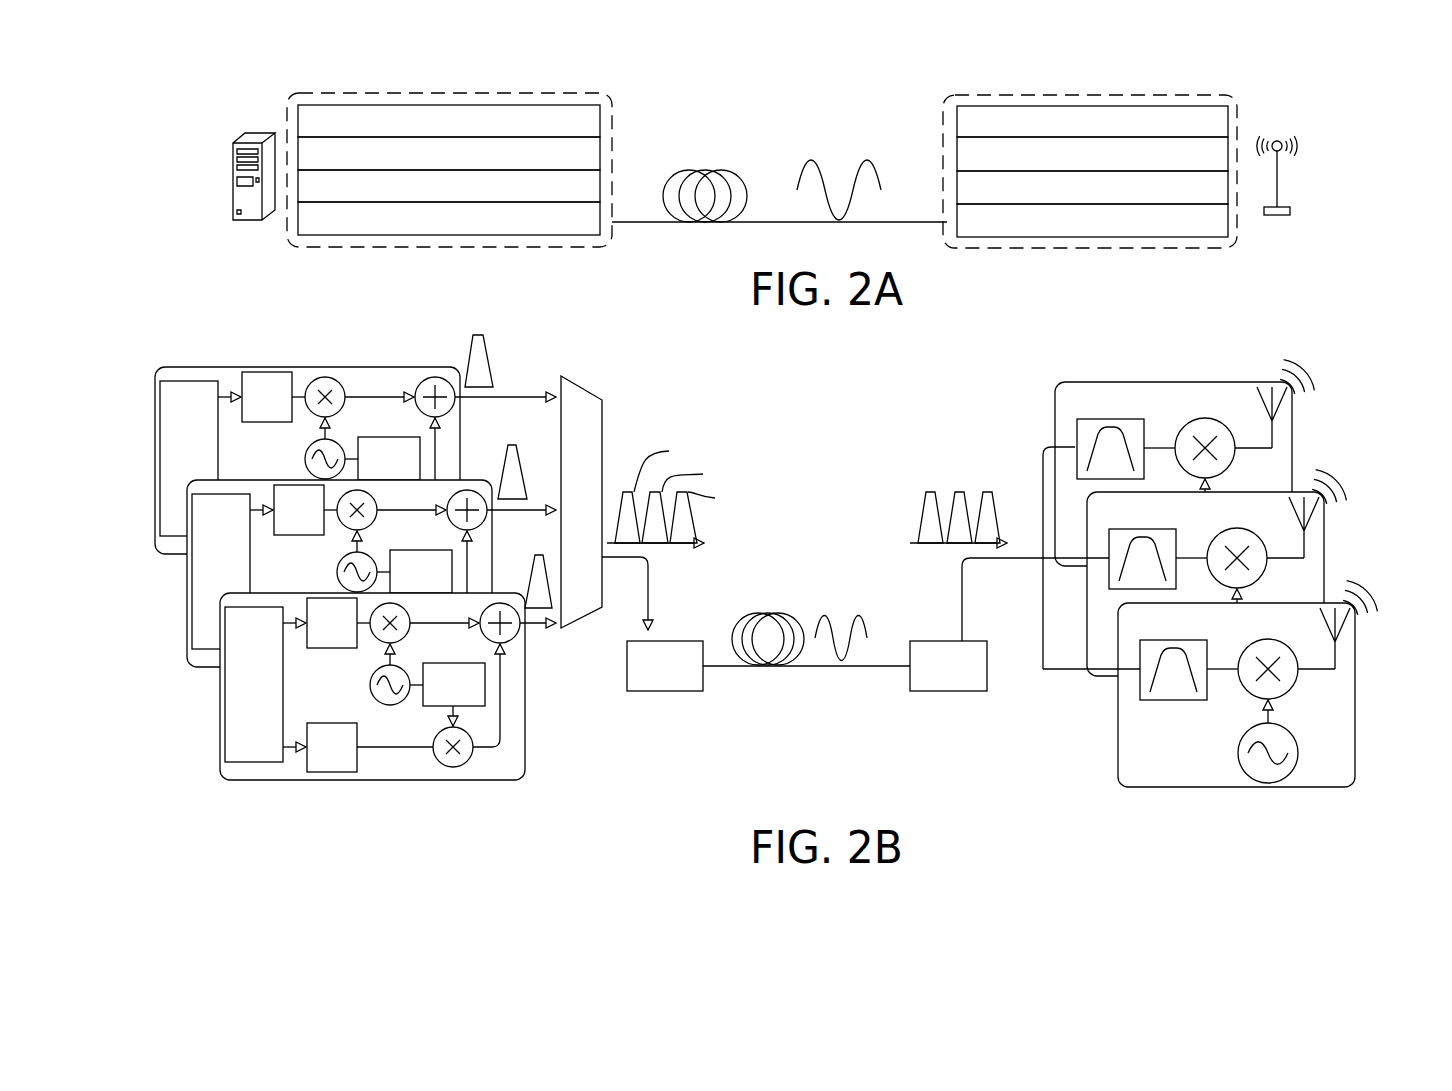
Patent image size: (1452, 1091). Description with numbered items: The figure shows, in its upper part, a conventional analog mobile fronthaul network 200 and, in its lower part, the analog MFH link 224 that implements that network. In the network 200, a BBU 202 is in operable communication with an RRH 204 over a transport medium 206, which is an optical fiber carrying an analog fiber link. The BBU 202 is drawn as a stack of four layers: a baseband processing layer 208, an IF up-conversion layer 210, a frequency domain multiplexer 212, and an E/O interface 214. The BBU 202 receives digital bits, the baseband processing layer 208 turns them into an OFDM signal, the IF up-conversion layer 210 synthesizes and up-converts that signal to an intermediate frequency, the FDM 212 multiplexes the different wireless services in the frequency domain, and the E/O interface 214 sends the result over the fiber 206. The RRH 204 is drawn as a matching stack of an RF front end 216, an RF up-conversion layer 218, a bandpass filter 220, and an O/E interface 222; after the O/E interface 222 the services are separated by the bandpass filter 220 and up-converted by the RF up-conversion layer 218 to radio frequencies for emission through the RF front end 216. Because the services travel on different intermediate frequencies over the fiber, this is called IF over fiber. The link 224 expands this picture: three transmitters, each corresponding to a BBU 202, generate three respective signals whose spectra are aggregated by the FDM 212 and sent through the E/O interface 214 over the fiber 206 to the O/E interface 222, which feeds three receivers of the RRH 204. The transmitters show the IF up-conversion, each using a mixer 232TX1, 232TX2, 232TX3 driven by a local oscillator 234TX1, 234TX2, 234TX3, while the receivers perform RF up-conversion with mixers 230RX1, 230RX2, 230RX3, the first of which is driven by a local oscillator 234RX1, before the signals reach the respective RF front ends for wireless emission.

In FIG. 2A, the analog MFH network 200 is at (877, 70).
In FIG. 2A, the BBU 202 is at (537, 92).
In FIG. 2B, the BBU 202 is at (280, 790).
In FIG. 2A, the RRH 204 is at (1132, 93).
In FIG. 2B, the RRH 204 is at (1258, 798).
In FIG. 2A, the transport medium 206 is at (700, 222).
In FIG. 2B, the transport medium 206 is at (884, 667).
In FIG. 2A, the baseband processing layer 208 is at (600, 118).
In FIG. 2A, the IF up-conversion layer 210 is at (600, 150).
In FIG. 2A, the frequency domain multiplexer 212 is at (600, 183).
In FIG. 2B, the frequency domain multiplexer 212 is at (602, 423).
In FIG. 2A, the E/O interface 214 is at (328, 237).
In FIG. 2B, the E/O interface 214 is at (650, 691).
In FIG. 2A, the RF front end 216 is at (957, 115).
In FIG. 2A, the RF up-conversion layer 218 is at (957, 150).
In FIG. 2A, the bandpass filter 220 is at (957, 190).
In FIG. 2A, the O/E interface 222 is at (957, 222).
In FIG. 2B, the O/E interface 222 is at (975, 691).
In FIG. 2B, the analog MFH link 224 is at (865, 410).
In FIG. 2B, the mixer 232TX1 is at (411, 613).
In FIG. 2B, the mixer 232TX2 is at (392, 503).
In FIG. 2B, the mixer 232TX3 is at (360, 390).
In FIG. 2B, the local oscillator 234TX1 is at (404, 668).
In FIG. 2B, the local oscillator 234TX2 is at (393, 554).
In FIG. 2B, the local oscillator 234TX3 is at (361, 441).
In FIG. 2B, the mixer 230RX1 is at (1266, 640).
In FIG. 2B, the mixer 230RX2 is at (1236, 538).
In FIG. 2B, the mixer 230RX3 is at (1204, 428).
In FIG. 2B, the local oscillator 234RX1 is at (1295, 752).